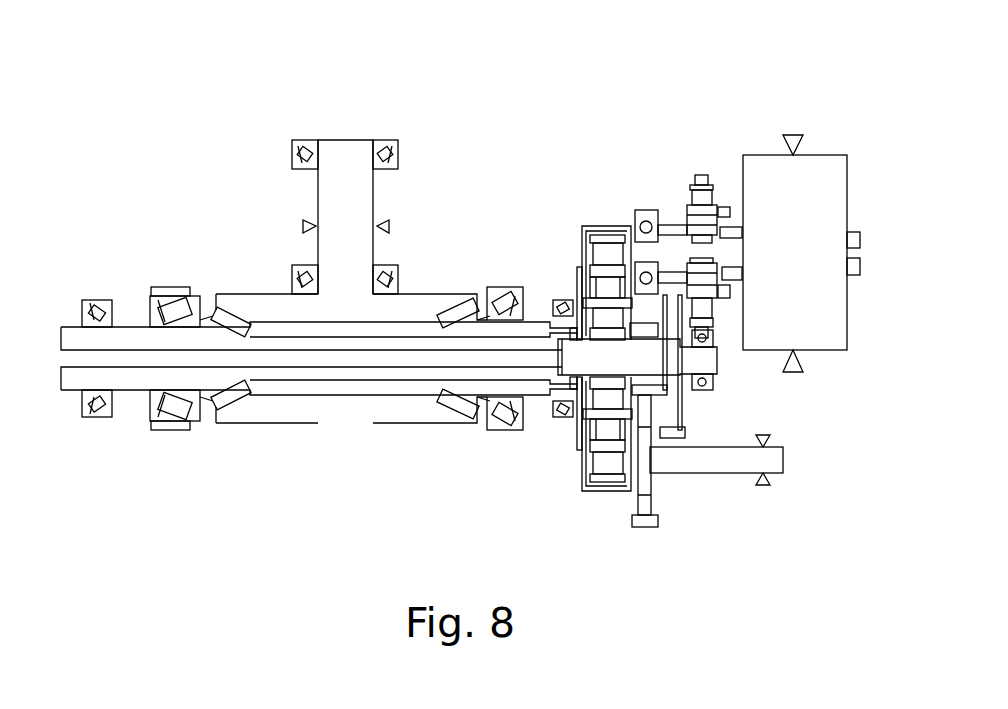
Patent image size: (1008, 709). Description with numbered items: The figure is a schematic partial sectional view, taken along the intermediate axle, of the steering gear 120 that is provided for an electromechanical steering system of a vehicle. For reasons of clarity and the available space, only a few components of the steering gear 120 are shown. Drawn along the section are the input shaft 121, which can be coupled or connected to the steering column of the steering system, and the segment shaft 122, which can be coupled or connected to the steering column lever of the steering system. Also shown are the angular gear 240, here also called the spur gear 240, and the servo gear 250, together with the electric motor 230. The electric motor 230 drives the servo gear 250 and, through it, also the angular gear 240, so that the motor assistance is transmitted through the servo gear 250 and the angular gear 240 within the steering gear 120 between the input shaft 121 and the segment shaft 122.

The steering gear 120 is at (240, 80).
The input shaft 121 is at (702, 473).
The segment shaft 122 is at (343, 140).
The electric motor 230 is at (820, 155).
The angular gear 240 is at (507, 492).
The servo gear 250 is at (730, 173).